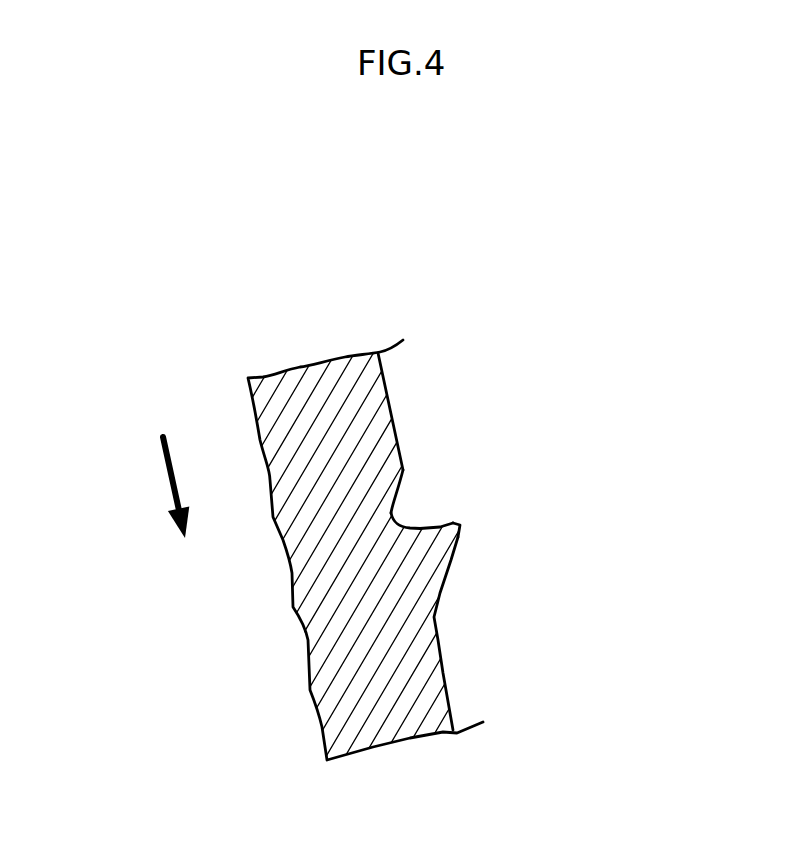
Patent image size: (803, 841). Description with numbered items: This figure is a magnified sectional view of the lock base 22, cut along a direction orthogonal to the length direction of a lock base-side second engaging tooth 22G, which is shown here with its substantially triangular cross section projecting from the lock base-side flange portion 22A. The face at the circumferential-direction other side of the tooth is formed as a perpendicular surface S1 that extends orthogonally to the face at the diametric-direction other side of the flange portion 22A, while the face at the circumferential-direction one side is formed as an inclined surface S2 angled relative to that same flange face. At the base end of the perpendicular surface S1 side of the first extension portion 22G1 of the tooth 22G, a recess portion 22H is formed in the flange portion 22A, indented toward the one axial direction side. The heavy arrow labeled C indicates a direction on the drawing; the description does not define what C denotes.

The lock base 22 is at (354, 490).
The lock base-side flange portion 22A is at (385, 400).
The recess portion 22H is at (479, 464).
The perpendicular surface S1 is at (423, 522).
The first extension portion 22G1 is at (464, 523).
The lock base-side second engaging tooth 22G is at (580, 522).
The inclined surface S2 is at (452, 567).
The direction of movement C is at (170, 485).